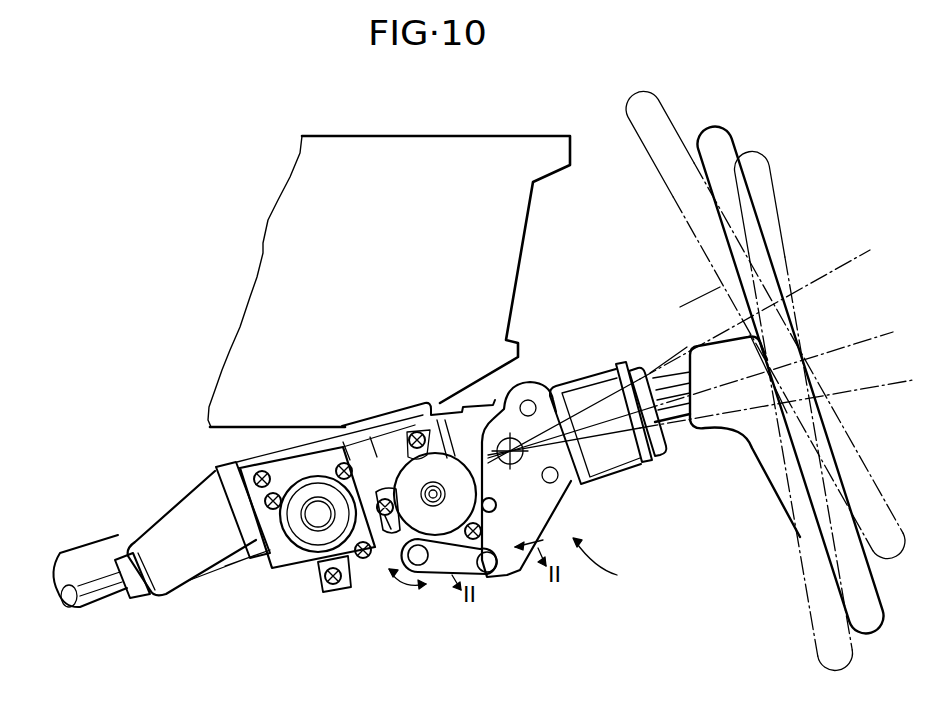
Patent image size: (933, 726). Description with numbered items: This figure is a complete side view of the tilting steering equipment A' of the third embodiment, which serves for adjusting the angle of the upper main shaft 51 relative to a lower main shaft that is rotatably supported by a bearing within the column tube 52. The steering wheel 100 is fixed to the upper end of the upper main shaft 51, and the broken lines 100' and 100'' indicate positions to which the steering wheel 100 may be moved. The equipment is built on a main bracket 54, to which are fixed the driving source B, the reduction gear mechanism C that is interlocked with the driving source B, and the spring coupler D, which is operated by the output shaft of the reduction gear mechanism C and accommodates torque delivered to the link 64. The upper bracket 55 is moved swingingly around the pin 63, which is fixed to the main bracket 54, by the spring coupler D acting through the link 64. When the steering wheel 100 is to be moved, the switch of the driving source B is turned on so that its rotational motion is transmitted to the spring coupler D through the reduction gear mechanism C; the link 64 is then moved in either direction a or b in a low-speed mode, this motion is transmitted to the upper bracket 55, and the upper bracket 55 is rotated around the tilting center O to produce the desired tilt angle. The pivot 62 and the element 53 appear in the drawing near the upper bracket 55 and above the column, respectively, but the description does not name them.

The column tube 52 is at (97, 594).
The driving source B is at (177, 563).
The reduction gear mechanism C is at (307, 545).
The spring coupler D is at (420, 522).
The link movement direction a is at (398, 580).
The link movement direction b is at (426, 596).
The link 64 is at (438, 562).
The pivot pin 62 is at (488, 580).
The upper bracket 55 is at (550, 500).
The tilting center O is at (515, 443).
The pin 63 is at (570, 480).
The upper main shaft 51 is at (689, 420).
The main bracket 54 is at (458, 423).
The instrument panel 53 is at (523, 225).
The steering wheel 100 is at (767, 379).
The tilted steering wheel position 100' is at (748, 324).
The tilted steering wheel position 100'' is at (740, 410).
The tilting steering equipment A' is at (605, 564).